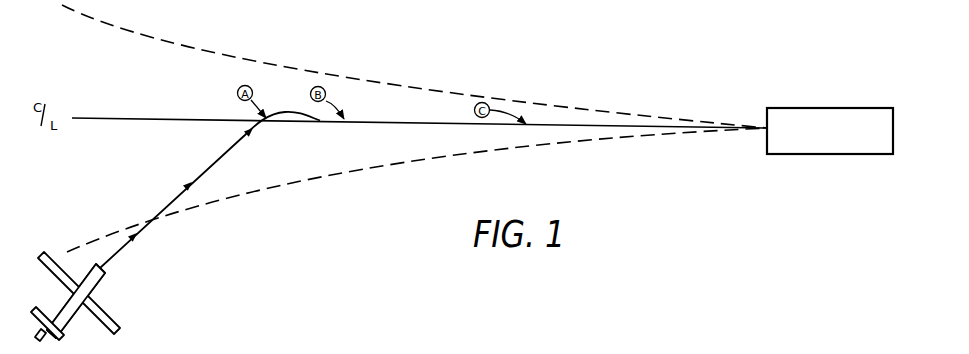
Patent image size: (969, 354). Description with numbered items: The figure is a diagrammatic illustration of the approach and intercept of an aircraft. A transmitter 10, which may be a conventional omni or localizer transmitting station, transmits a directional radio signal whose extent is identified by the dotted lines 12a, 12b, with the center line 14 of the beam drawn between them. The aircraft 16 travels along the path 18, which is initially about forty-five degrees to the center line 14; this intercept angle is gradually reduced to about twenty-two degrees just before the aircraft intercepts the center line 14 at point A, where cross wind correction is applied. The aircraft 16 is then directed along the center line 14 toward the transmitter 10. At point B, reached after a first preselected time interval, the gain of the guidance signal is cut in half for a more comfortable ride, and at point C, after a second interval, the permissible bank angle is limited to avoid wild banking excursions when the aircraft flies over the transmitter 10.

The transmitter 10 is at (836, 100).
The dotted line 12a is at (486, 102).
The dotted line 12b is at (568, 146).
The center line 14 is at (605, 127).
The aircraft 16 is at (103, 285).
The path 18 is at (227, 150).